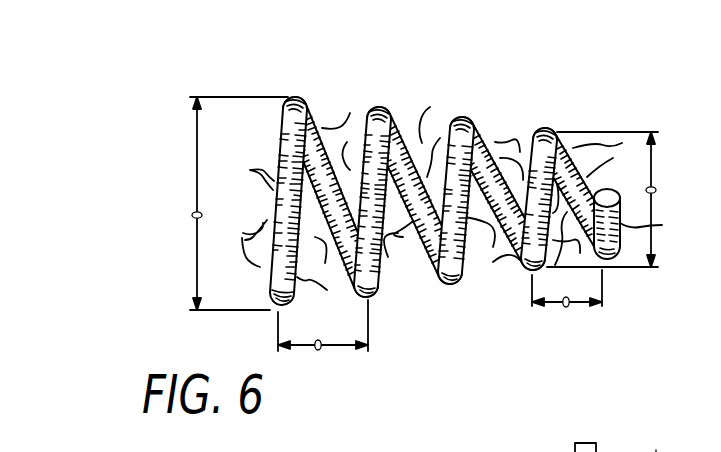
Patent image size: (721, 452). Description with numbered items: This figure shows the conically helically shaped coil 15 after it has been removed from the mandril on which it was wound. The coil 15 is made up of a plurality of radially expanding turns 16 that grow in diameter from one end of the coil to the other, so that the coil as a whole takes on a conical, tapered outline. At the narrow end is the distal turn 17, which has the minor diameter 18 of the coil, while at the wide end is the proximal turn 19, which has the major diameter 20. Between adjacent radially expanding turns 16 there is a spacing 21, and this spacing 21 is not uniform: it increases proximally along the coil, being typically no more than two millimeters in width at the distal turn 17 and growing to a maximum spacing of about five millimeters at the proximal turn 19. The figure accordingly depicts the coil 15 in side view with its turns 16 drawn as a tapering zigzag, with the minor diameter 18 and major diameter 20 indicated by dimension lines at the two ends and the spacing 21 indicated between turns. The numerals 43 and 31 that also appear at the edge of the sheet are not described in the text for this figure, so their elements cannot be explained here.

The conically helically shaped coil 15 is at (392, 90).
The radially expanding turns 16 is at (437, 284).
The distal turn 17 is at (507, 116).
The minor diameter 18 is at (658, 189).
The proximal turn 19 is at (312, 106).
The major diameter 20 is at (191, 217).
The spacing 21 is at (318, 350).
The block 43 is at (587, 449).
The spring seat 31 is at (656, 451).